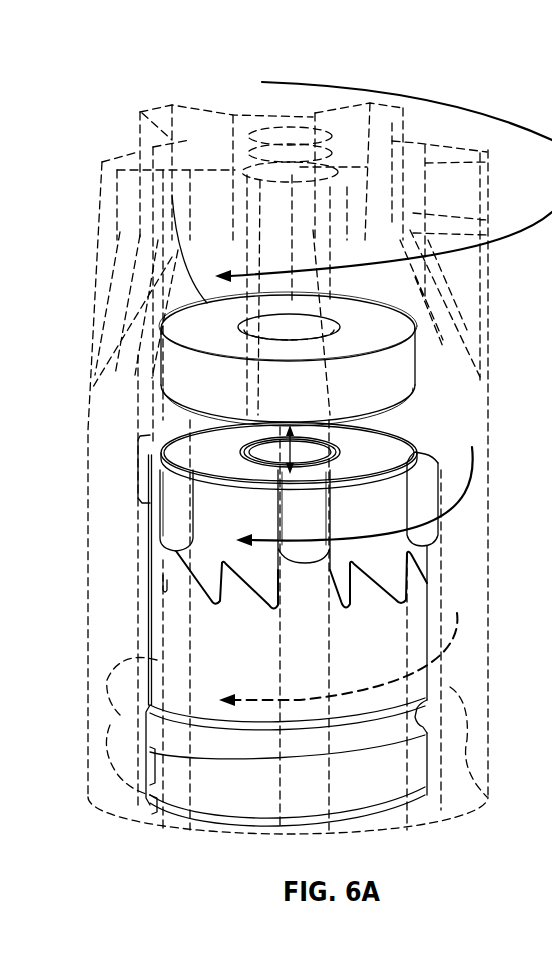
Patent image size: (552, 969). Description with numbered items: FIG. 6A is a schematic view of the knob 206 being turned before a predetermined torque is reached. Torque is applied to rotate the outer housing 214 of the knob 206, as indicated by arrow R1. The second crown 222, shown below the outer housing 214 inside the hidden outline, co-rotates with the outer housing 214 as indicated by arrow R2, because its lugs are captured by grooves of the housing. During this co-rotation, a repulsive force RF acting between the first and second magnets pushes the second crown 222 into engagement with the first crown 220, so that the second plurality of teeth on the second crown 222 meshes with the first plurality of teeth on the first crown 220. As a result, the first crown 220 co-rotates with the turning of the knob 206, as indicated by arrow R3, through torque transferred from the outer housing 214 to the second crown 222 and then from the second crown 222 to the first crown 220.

The knob 206 is at (108, 72).
The outer housing 214 is at (100, 437).
The first crown 220 is at (220, 647).
The second crown 222 is at (220, 517).
The repulsive force RF is at (288, 427).
The arrow R1 is at (485, 110).
The arrow R2 is at (472, 447).
The arrow R3 is at (457, 613).